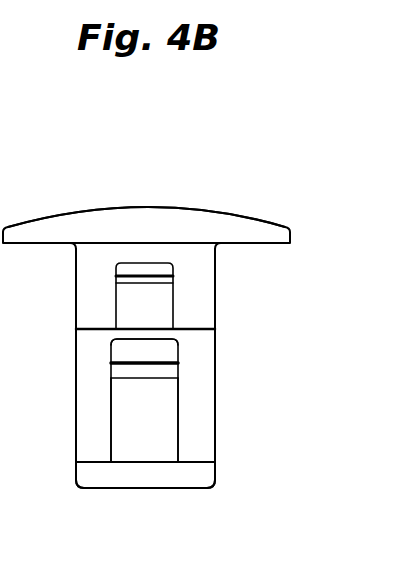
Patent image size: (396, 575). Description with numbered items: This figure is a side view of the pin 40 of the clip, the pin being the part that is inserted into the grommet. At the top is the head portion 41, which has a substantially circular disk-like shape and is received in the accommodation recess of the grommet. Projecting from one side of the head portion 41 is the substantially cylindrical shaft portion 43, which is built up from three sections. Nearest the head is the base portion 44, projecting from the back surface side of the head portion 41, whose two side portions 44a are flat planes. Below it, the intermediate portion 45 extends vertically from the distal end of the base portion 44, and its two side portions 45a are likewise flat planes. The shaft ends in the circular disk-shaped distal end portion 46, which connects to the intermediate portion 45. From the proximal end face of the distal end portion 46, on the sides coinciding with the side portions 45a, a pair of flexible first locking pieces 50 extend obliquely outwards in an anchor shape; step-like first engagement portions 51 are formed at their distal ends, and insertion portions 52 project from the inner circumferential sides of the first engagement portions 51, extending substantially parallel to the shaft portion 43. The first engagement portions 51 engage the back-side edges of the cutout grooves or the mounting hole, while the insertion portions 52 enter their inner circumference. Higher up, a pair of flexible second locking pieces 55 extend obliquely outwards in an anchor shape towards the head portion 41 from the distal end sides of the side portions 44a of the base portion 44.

The pin 40 is at (190, 206).
The head portion 41 is at (250, 228).
The shaft portion 43 is at (290, 302).
The base portion 44 is at (215, 312).
The side portion of the base portion 44a is at (200, 270).
The intermediate portion 45 is at (215, 373).
The side portion of the intermediate portion 45a is at (195, 443).
The distal end portion 46 is at (215, 467).
The first locking piece 50 is at (128, 422).
The first engagement portion 51 is at (112, 364).
The insertion portion 52 is at (120, 352).
The second locking piece 55 is at (127, 302).